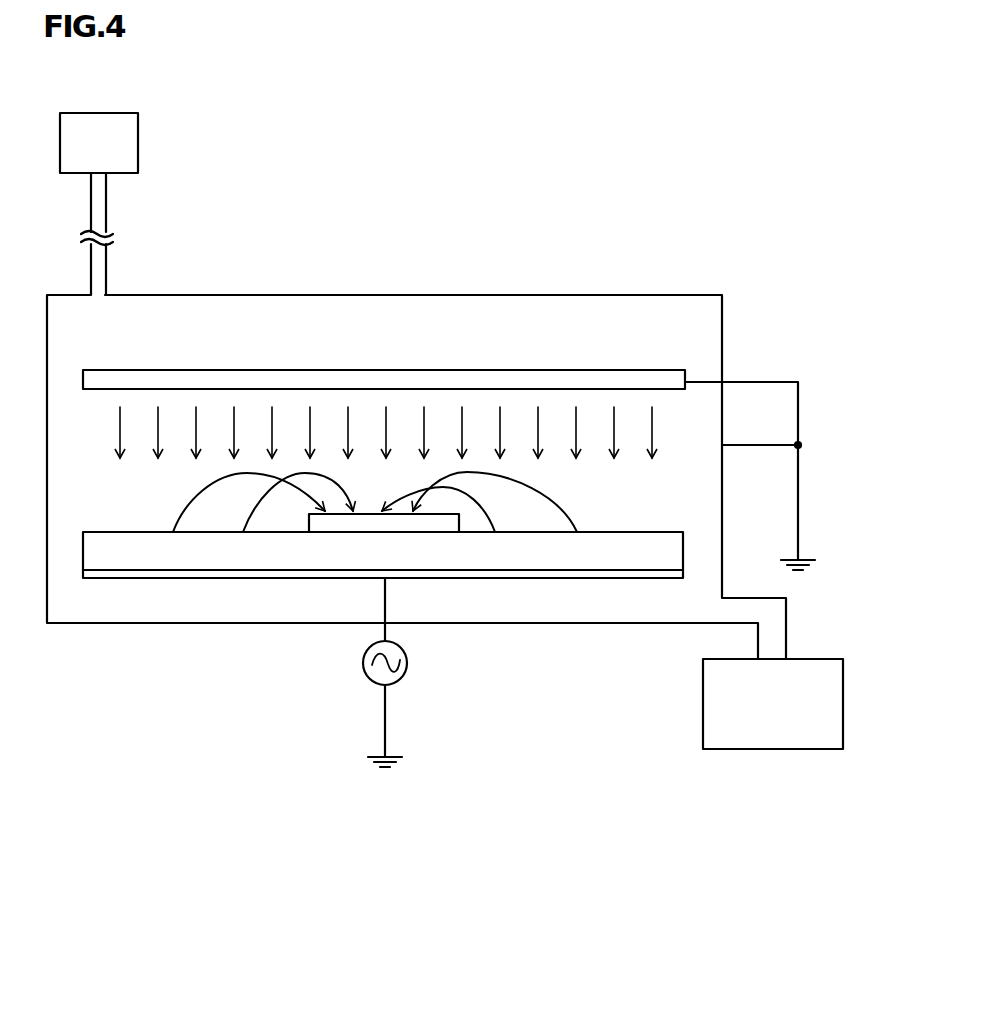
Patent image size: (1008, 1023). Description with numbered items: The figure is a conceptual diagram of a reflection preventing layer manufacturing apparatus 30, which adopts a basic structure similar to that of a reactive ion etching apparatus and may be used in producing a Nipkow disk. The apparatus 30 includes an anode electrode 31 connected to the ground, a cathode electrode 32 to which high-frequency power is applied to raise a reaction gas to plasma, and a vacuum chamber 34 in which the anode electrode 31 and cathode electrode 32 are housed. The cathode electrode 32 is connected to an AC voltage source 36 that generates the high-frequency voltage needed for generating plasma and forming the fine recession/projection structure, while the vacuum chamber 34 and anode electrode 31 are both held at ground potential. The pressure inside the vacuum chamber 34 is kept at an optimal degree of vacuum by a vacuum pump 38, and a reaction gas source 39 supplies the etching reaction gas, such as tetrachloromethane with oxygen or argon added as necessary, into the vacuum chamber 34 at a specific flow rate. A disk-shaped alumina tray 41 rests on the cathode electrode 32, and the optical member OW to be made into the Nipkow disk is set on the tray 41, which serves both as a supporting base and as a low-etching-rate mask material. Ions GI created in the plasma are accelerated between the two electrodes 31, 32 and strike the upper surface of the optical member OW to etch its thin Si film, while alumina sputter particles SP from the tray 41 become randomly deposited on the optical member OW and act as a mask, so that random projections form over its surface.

The reflection preventing layer manufacturing apparatus 30 is at (905, 59).
The anode electrode 31 is at (467, 377).
The cathode electrode 32 is at (528, 570).
The vacuum chamber 34 is at (355, 295).
The AC voltage source 36 is at (363, 672).
The vacuum pump 38 is at (748, 738).
The reaction gas source 39 is at (130, 148).
The tray 41 is at (617, 555).
The ions GI is at (610, 427).
The optical member OW is at (437, 520).
The sputter particles SP is at (253, 512).